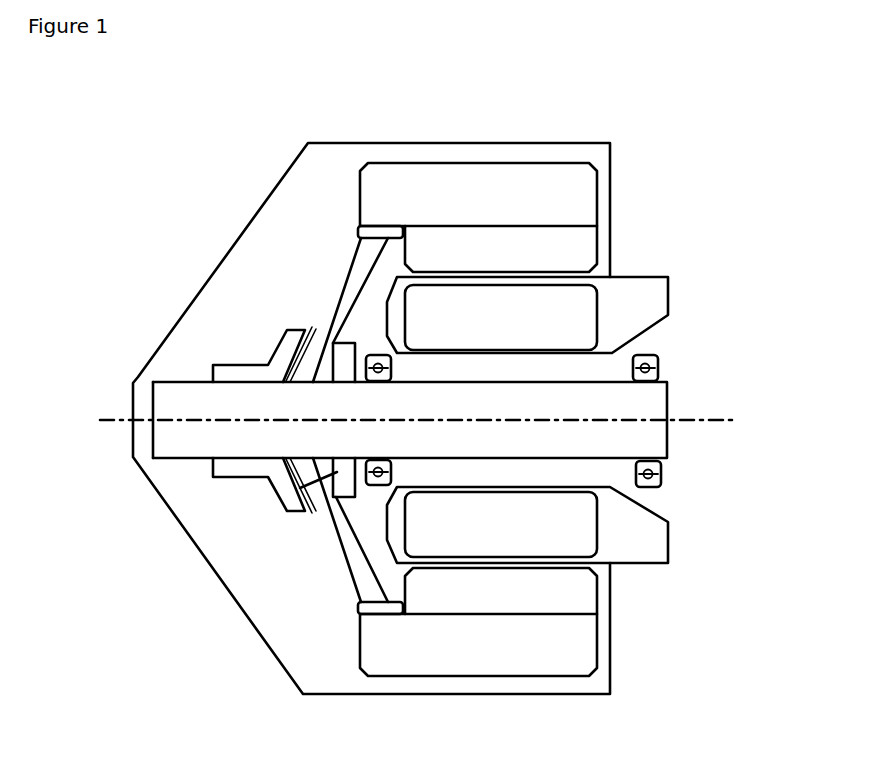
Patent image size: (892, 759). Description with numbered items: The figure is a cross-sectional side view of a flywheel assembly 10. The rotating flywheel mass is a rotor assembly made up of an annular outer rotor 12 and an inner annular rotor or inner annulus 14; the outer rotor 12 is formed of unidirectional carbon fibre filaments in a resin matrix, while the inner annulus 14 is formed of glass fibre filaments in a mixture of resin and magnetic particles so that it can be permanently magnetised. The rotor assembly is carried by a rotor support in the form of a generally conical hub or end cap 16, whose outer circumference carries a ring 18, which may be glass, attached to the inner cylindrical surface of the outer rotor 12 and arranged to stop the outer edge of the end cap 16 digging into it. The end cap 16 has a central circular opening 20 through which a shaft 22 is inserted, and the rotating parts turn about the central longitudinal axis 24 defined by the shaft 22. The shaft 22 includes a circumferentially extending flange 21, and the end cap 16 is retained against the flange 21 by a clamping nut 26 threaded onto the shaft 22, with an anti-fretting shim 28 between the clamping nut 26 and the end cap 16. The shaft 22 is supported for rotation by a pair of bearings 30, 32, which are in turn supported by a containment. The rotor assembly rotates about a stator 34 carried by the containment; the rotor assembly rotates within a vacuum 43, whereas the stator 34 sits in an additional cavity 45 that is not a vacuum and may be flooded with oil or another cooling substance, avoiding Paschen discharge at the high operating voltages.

The flywheel assembly 10 is at (700, 190).
The outer rotor 12 is at (575, 180).
The inner annulus 14 is at (567, 253).
The end cap 16 is at (325, 545).
The ring 18 is at (358, 608).
The central circular opening 20 is at (195, 382).
The flange 21 is at (300, 488).
The shaft 22 is at (192, 395).
The central longitudinal axis 24 is at (718, 395).
The clamping nut 26 is at (241, 372).
The anti-fretting shim 28 is at (307, 327).
The bearing 30 is at (391, 368).
The bearing 32 is at (658, 352).
The stator 34 is at (567, 315).
The vacuum 43 is at (597, 673).
The cavity 45 is at (630, 322).